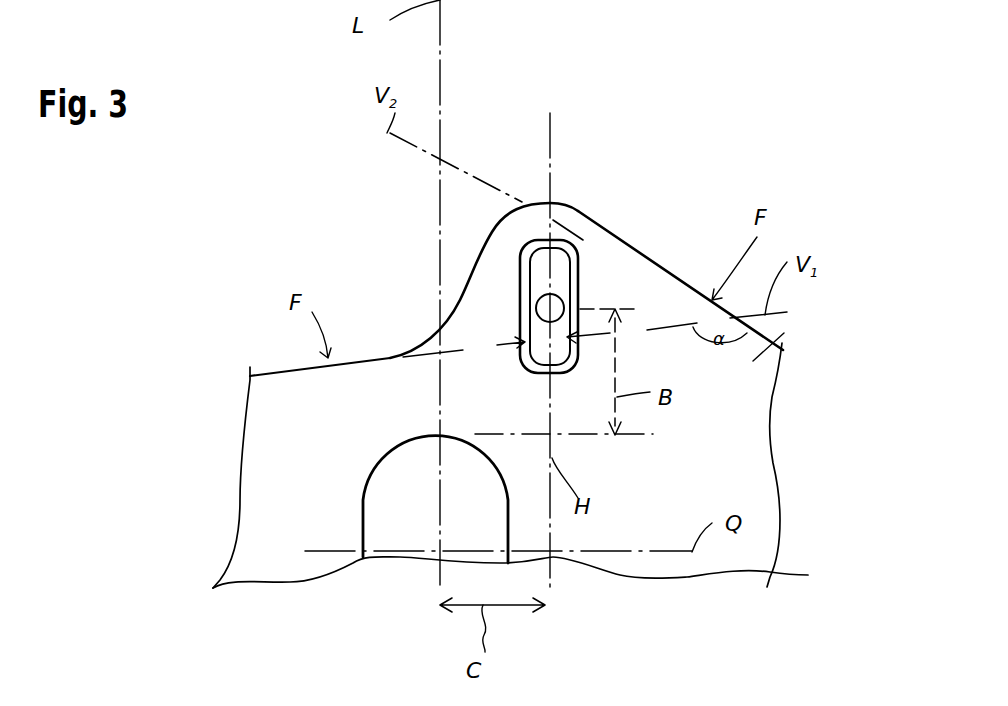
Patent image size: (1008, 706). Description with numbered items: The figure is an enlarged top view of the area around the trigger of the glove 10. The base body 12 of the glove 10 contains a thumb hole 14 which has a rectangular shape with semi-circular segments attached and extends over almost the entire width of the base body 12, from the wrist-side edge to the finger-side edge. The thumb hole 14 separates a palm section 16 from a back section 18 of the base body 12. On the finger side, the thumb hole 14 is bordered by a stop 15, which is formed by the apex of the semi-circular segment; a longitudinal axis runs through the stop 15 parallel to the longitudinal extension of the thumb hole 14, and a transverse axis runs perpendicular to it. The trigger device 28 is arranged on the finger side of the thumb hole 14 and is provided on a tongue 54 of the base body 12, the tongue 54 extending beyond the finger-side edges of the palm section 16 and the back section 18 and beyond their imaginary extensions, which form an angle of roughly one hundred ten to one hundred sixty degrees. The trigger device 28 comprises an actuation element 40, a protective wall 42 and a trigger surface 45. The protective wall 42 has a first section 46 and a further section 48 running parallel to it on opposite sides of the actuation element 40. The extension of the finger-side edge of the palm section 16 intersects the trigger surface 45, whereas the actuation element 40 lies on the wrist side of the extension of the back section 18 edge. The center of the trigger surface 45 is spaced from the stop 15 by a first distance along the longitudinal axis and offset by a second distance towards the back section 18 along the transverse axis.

The glove 10 is at (204, 160).
The base body 12 is at (265, 385).
The thumb hole 14 is at (382, 490).
The stop 15 is at (430, 425).
The palm section 16 is at (290, 400).
The back section 18 is at (782, 343).
The trigger device 28 is at (604, 282).
The actuation element 40 is at (560, 243).
The protective wall 42 is at (572, 234).
The trigger surface 45 is at (528, 330).
The first section 46 is at (520, 298).
The further section 48 is at (580, 297).
The tongue 54 is at (596, 222).